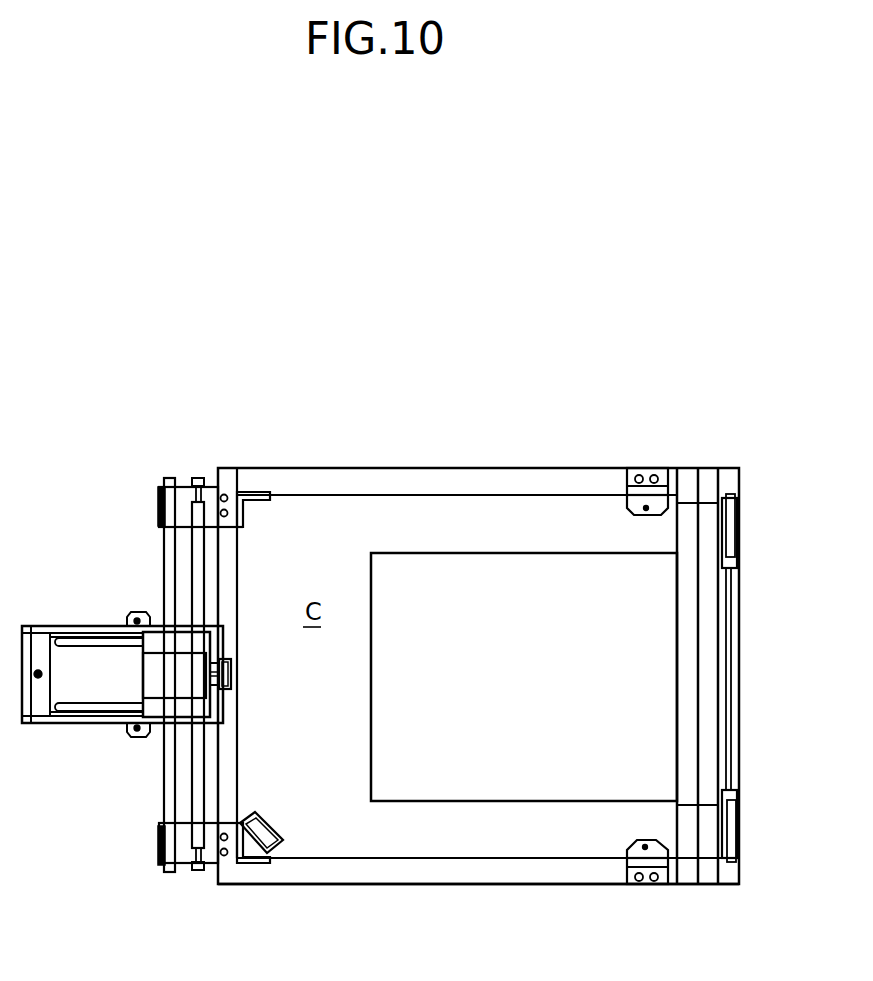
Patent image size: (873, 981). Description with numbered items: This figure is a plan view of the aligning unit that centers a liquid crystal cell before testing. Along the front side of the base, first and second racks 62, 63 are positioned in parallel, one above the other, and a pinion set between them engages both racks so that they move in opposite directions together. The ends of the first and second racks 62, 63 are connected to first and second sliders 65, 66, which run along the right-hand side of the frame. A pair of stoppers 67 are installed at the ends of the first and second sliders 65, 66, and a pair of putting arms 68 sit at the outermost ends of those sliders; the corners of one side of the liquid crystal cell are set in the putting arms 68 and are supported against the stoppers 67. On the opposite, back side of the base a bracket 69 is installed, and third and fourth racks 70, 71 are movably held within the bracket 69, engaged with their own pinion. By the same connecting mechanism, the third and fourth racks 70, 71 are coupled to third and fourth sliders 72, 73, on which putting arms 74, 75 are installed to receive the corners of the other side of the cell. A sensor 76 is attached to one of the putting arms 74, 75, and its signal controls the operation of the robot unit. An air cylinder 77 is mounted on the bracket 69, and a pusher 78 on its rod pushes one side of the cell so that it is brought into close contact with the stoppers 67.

The first rack 62 is at (723, 765).
The second rack 63 is at (728, 679).
The first slider 65 is at (692, 478).
The second slider 66 is at (707, 873).
The stopper 67 is at (688, 542).
The putting arm 68 is at (635, 512).
The bracket 69 is at (77, 627).
The third rack 70 is at (168, 765).
The fourth rack 71 is at (200, 798).
The third slider 72 is at (185, 487).
The fourth slider 73 is at (187, 864).
The putting arm 74 is at (247, 500).
The putting arm 75 is at (252, 854).
The sensor 76 is at (269, 817).
The air cylinder 77 is at (158, 662).
The pusher 78 is at (229, 684).